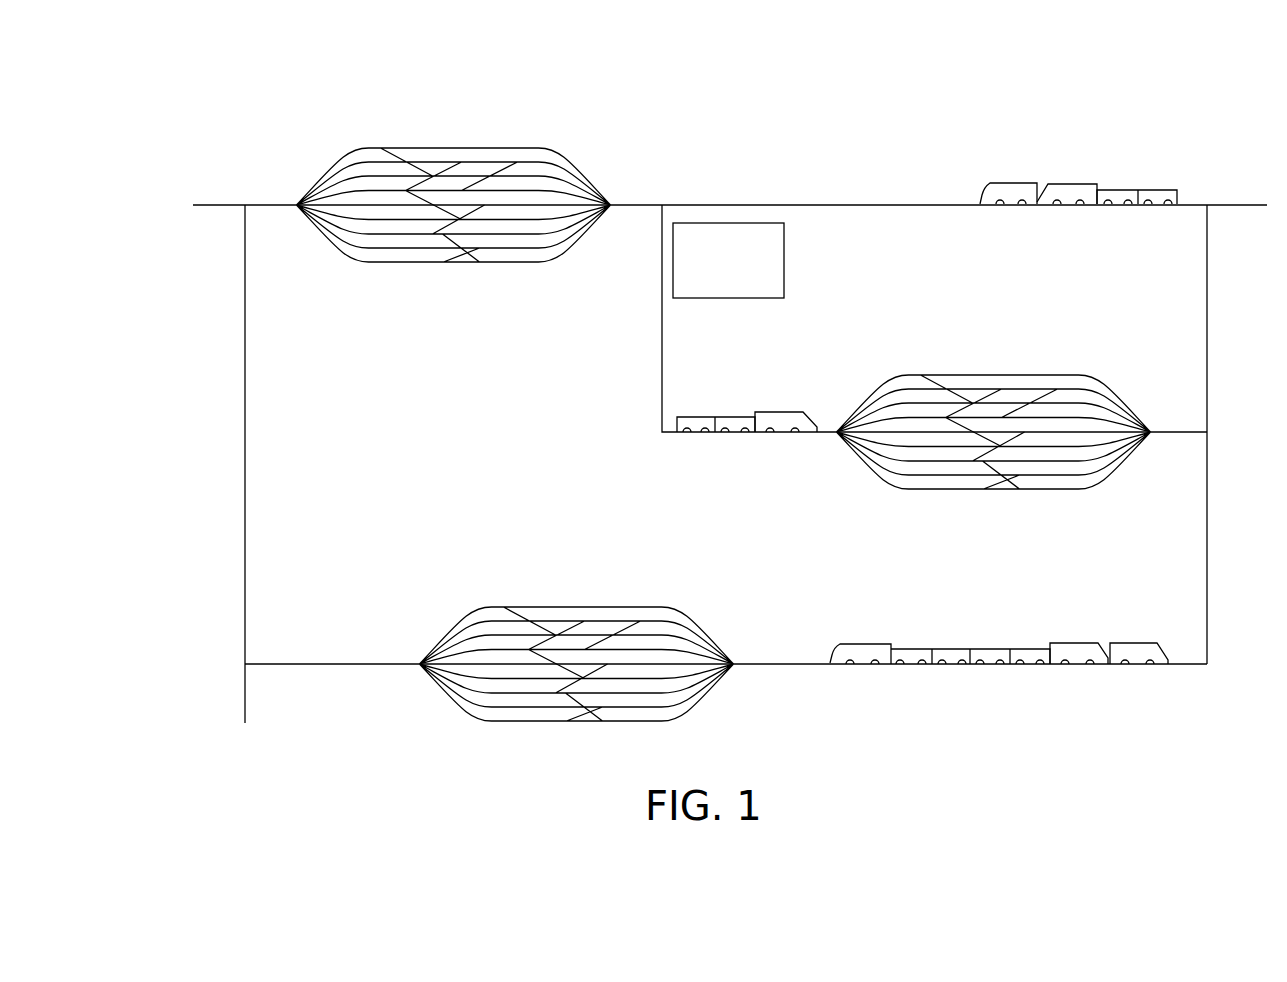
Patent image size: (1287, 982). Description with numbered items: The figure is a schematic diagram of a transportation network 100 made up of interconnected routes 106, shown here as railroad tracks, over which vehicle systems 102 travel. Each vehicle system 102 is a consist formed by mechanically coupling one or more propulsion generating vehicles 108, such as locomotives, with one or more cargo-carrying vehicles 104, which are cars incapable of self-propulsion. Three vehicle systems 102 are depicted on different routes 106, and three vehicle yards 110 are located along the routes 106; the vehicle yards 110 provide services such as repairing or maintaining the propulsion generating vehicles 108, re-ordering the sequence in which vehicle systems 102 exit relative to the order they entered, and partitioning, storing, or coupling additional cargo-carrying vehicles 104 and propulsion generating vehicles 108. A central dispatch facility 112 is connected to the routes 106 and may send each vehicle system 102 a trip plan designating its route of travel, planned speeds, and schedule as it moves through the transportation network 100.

The transportation network 100 is at (255, 92).
The vehicle system 102 is at (1177, 212).
The cargo-carrying vehicle 104 is at (1156, 188).
The route 106 is at (866, 203).
The propulsion generating vehicle 108 is at (1010, 182).
The vehicle yard 110 is at (476, 131).
The central dispatch facility 112 is at (727, 222).